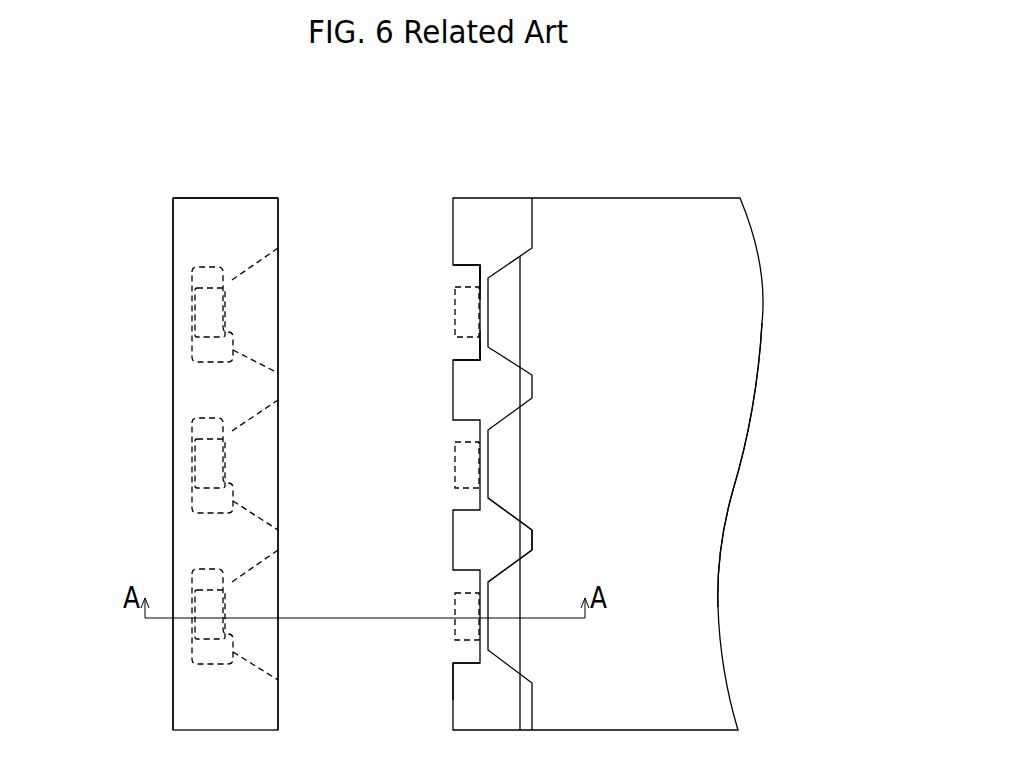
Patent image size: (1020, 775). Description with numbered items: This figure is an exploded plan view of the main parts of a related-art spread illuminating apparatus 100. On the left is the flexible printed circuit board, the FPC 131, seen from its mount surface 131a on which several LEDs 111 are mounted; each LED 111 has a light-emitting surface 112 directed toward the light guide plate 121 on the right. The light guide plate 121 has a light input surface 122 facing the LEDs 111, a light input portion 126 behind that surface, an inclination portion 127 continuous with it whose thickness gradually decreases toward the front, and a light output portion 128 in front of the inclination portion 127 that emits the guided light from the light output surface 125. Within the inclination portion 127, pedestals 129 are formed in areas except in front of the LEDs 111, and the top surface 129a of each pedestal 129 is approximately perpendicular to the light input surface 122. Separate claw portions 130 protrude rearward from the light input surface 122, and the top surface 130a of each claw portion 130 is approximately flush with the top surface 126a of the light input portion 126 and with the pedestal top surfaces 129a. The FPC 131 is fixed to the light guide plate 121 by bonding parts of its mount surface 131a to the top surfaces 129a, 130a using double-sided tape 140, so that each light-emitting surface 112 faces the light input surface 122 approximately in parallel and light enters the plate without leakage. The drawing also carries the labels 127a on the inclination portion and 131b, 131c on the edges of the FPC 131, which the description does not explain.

The spread illuminating apparatus 100 is at (112, 126).
The LED 111 is at (195, 303).
The light-emitting surface 112 is at (195, 348).
The light guide plate 121 is at (727, 195).
The light input surface 122 is at (480, 272).
The light output surface 125 is at (735, 367).
The light input portion 126 is at (480, 270).
The top surface of the light input portion 126a is at (480, 280).
The inclination portion 127 is at (480, 350).
The step surface 127a is at (480, 356).
The light output portion 128 is at (725, 450).
The pedestal 129 is at (490, 528).
The top surface of the pedestal 129a is at (490, 550).
The claw portion 130 is at (462, 672).
The top surface of the claw portion 130a is at (462, 692).
The flexible printed circuit board 131 is at (267, 192).
The mount surface 131a is at (232, 215).
The plate outer surface 131b is at (188, 248).
The plate inner surface 131c is at (278, 228).
The double-sided tape 140 is at (278, 392).